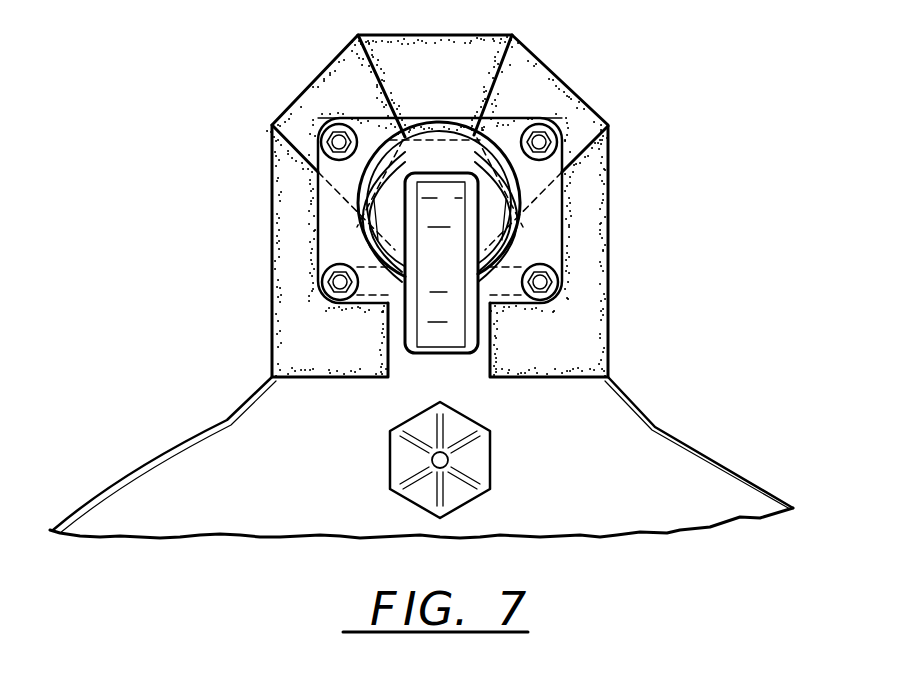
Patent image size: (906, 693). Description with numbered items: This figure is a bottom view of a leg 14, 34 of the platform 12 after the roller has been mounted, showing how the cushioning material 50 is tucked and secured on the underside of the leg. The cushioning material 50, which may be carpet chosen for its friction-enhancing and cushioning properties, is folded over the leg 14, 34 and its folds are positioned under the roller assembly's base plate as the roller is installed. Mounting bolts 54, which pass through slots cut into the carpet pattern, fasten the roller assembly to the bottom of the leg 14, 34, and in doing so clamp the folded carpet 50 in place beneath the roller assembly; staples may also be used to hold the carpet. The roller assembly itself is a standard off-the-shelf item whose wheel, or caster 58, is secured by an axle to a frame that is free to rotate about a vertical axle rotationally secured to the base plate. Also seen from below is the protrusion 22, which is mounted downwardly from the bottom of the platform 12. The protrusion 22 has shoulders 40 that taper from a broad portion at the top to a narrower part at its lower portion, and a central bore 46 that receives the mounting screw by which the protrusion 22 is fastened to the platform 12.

The platform 12 is at (680, 433).
The leg 14 is at (312, 88).
The leg 34 is at (312, 88).
The protrusion 22 is at (435, 463).
The shoulders 40 is at (493, 473).
The bore 46 is at (407, 503).
The cushioning material 50 is at (550, 77).
The mounting bolts 54 is at (323, 143).
The caster 58 is at (457, 332).